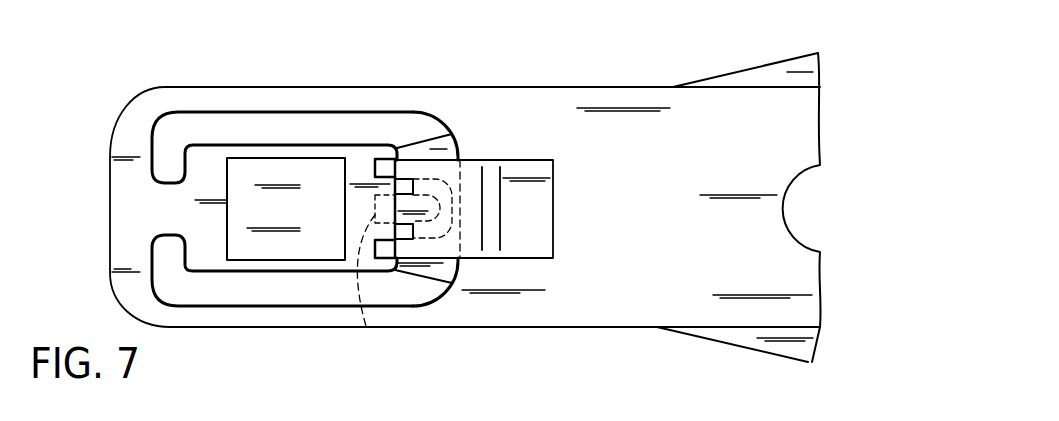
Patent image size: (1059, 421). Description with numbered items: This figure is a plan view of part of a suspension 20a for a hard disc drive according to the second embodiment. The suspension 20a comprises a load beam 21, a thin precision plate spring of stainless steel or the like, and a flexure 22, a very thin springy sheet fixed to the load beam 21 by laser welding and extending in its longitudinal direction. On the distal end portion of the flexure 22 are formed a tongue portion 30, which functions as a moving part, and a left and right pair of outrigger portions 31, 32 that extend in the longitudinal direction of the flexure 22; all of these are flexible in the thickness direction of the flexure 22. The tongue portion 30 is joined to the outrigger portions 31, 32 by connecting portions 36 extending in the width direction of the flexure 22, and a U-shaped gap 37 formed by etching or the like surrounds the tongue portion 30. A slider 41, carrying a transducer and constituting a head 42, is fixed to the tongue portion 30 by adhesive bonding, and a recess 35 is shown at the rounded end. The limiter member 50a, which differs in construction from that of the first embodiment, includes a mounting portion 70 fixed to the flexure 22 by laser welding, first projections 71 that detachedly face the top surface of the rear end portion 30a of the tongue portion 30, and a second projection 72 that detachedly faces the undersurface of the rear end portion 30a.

The suspension 20a is at (636, 78).
The load beam 21 is at (760, 67).
The flexure 22 is at (621, 316).
The tongue portion 30 is at (412, 214).
The rear end portion 30a is at (400, 145).
The outrigger portion 31 is at (315, 97).
The outrigger portion 32 is at (270, 316).
The recess 35 is at (167, 206).
The connecting portion 36 is at (163, 98).
The U-shaped gap 37 is at (210, 118).
The slider 41 is at (245, 250).
The head 42 is at (303, 270).
The limiter member 50a is at (530, 150).
The mounting portion 70 is at (547, 208).
The first projections 71 is at (385, 158).
The second projection 72 is at (366, 328).